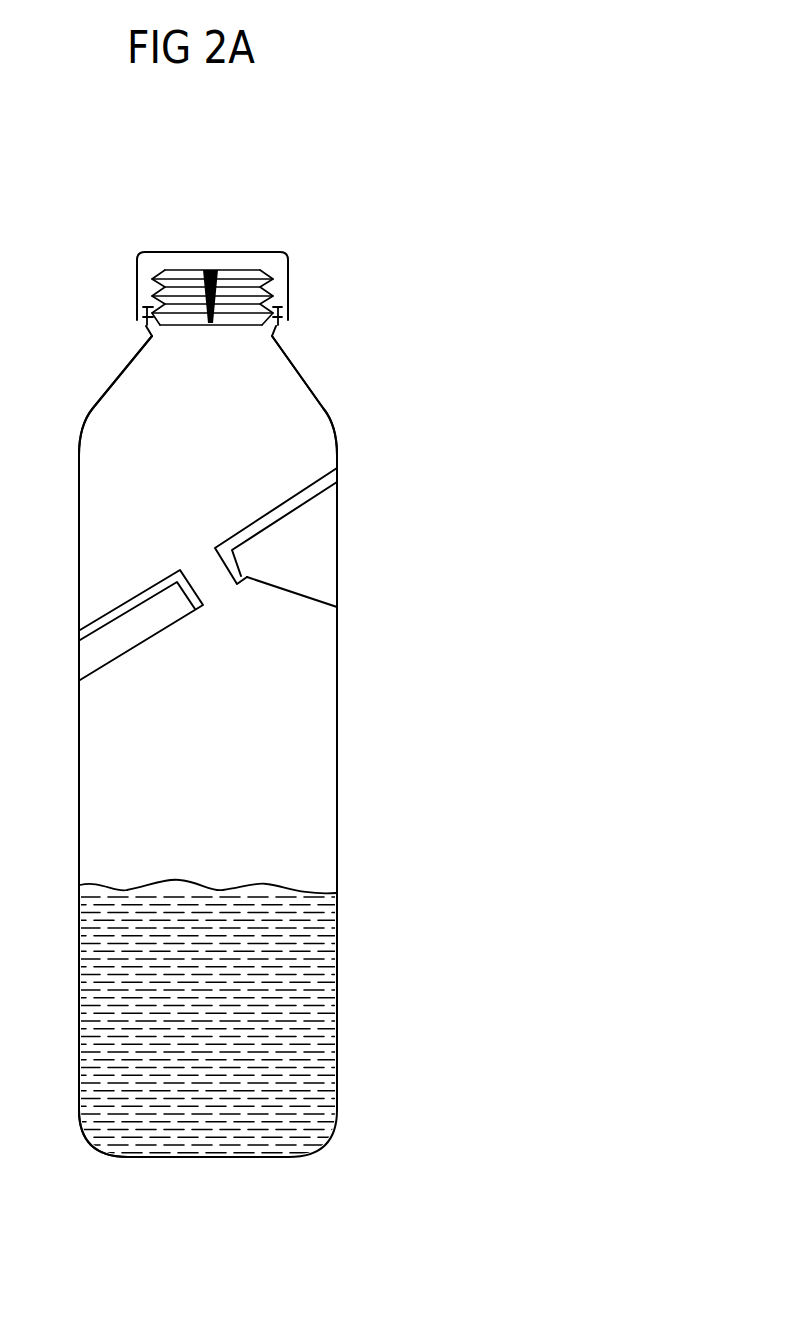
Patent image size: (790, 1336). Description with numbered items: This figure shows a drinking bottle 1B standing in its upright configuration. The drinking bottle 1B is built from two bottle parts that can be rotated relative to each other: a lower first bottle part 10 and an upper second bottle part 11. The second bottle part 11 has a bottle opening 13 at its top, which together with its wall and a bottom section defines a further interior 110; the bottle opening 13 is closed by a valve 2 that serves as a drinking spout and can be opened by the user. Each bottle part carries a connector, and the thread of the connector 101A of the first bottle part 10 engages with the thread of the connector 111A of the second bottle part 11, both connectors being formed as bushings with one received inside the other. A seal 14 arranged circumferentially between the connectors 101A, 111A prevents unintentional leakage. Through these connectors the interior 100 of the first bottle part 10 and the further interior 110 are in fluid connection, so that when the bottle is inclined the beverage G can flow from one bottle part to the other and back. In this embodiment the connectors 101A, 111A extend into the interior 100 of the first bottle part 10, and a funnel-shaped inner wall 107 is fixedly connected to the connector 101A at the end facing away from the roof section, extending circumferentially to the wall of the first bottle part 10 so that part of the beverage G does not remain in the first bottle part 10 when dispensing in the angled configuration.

The first bottle part 10 is at (337, 765).
The second bottle part 11 is at (337, 433).
The further interior 110 is at (239, 436).
The interior 100 is at (234, 774).
The seal 14 is at (257, 252).
The valve 2 is at (140, 284).
The drinking bottle 1B is at (360, 262).
The bottle opening 13 is at (281, 332).
The connector 101A is at (187, 579).
The connector 111A is at (240, 559).
The inner wall 107 is at (275, 587).
The beverage G is at (298, 1027).